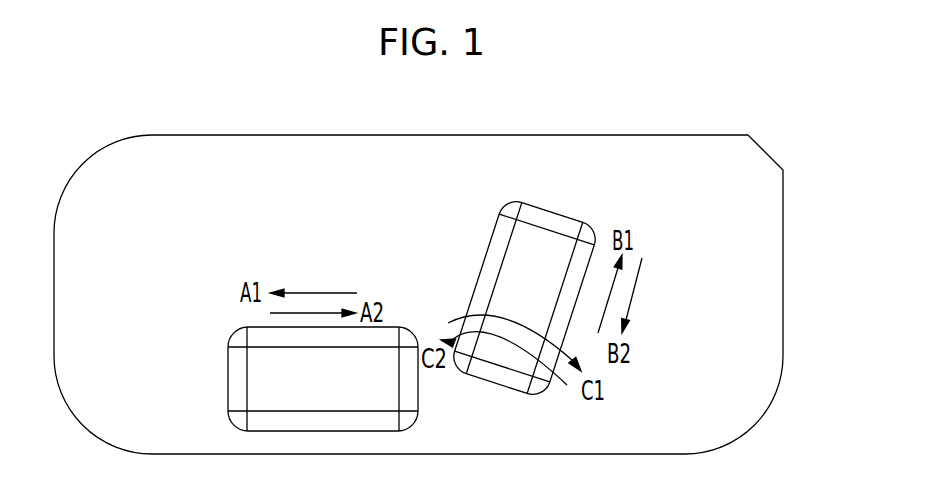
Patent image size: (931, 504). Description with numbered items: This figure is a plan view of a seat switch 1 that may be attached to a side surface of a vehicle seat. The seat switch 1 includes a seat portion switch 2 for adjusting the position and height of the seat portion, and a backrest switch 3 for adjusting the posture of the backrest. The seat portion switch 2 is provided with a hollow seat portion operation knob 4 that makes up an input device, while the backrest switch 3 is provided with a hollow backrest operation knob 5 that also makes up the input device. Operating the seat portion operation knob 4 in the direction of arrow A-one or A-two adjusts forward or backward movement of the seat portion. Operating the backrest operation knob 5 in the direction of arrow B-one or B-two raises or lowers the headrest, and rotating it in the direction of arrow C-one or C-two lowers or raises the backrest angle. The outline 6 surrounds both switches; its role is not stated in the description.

The seat switch 1 is at (443, 244).
The seat portion switch 2 is at (268, 327).
The backrest switch 3 is at (498, 243).
The seat portion operation knob 4 is at (262, 380).
The backrest operation knob 5 is at (553, 212).
The housing 6 is at (753, 302).